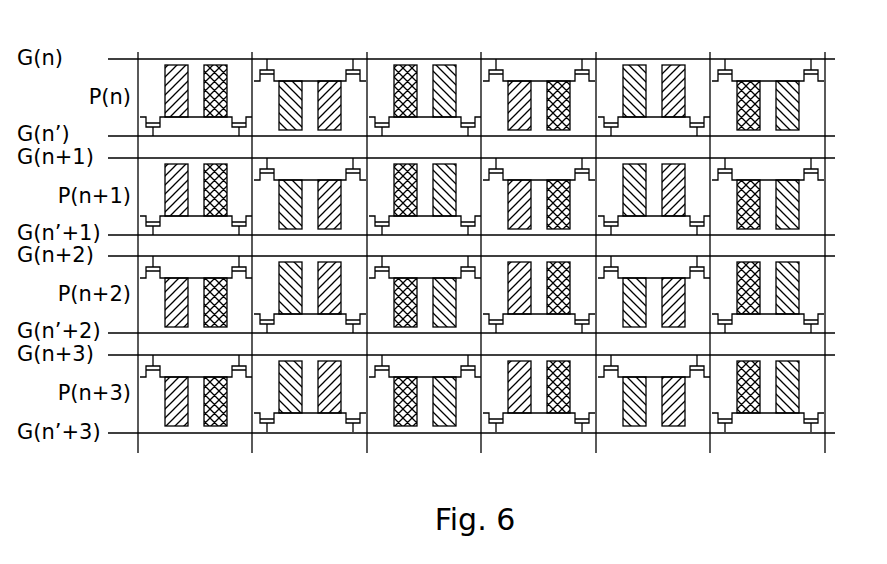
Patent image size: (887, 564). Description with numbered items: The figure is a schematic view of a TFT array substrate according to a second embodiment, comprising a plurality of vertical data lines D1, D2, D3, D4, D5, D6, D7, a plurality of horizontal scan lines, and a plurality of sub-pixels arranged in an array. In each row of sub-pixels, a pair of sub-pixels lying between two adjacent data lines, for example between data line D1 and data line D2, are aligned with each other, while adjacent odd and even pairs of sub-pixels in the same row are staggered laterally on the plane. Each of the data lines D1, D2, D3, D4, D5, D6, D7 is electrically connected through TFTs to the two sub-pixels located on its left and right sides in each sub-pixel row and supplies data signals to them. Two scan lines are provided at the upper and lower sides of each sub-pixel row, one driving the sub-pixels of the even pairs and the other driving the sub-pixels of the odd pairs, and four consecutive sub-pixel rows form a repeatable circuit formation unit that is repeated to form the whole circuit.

The data line D1 is at (138, 238).
The data line D2 is at (252, 238).
The data line D3 is at (367, 238).
The data line D4 is at (481, 238).
The data line D5 is at (596, 236).
The data line D6 is at (710, 236).
The data line D7 is at (825, 238).